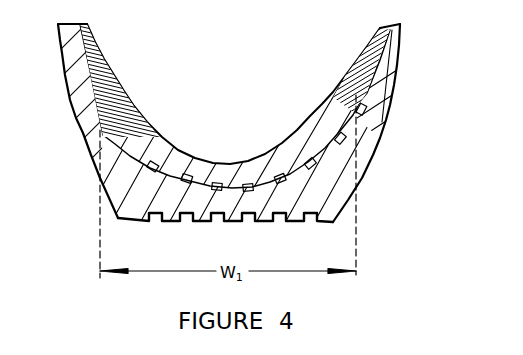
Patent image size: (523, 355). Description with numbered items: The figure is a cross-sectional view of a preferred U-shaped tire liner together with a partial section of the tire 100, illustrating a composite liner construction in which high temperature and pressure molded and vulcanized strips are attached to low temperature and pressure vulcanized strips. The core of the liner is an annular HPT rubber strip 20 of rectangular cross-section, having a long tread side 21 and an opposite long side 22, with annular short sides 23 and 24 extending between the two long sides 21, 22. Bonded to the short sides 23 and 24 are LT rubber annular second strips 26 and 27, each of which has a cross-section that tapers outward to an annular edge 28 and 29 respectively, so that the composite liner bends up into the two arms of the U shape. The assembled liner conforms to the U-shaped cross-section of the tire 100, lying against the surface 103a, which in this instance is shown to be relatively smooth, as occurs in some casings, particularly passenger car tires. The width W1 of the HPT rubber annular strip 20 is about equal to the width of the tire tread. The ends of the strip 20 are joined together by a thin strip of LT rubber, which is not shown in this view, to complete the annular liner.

The tire 100 is at (362, 247).
The HPT rubber strip 20 is at (145, 132).
The tread side 21 is at (138, 210).
The opposite long side 22 is at (308, 114).
The short side 23 is at (147, 121).
The short side 24 is at (377, 128).
The LT rubber annular second strip 26 is at (110, 103).
The LT rubber annular second strip 27 is at (367, 92).
The annular edge 28 is at (87, 25).
The annular edge 29 is at (380, 28).
The surface 103a is at (320, 160).